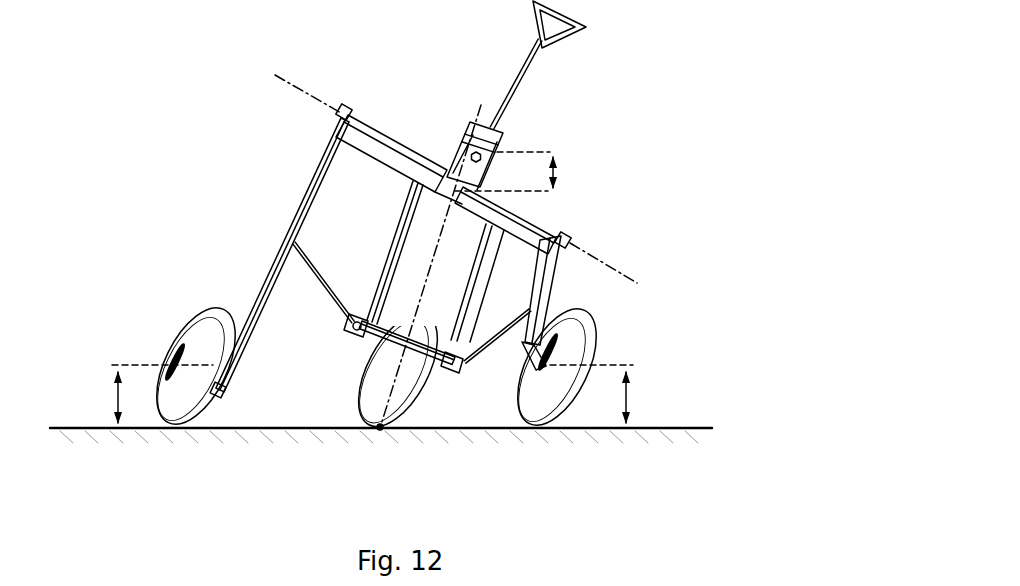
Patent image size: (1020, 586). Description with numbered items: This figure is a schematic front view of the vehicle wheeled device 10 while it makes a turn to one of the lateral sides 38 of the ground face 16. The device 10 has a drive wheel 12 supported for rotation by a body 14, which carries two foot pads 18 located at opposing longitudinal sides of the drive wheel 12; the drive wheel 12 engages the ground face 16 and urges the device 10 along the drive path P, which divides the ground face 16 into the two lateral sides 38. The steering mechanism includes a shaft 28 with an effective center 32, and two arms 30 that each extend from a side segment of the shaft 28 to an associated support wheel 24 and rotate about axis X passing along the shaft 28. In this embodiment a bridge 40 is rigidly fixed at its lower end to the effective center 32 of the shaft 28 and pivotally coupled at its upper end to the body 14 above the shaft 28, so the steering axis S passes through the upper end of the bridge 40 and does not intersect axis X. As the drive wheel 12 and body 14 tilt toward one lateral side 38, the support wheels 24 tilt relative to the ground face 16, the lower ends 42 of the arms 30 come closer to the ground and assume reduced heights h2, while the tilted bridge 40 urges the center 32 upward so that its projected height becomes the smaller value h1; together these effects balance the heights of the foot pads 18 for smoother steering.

The vehicle wheeled device 10 is at (380, 253).
The drive wheel 12 is at (412, 283).
The body 14 is at (521, 140).
The ground face 16 is at (687, 423).
The foot pads 18 is at (396, 339).
The support wheels 24 is at (196, 323).
The shaft 28 is at (404, 133).
The arms 30 is at (291, 222).
The effective center 32 is at (452, 190).
The lateral sides 38 is at (313, 423).
The bridge 40 is at (466, 172).
The lower end 42 is at (213, 390).
The drive path P is at (380, 430).
The steering axis S is at (440, 254).
The axis X is at (307, 89).
The projected distance h1 is at (530, 172).
The height h2 is at (369, 394).